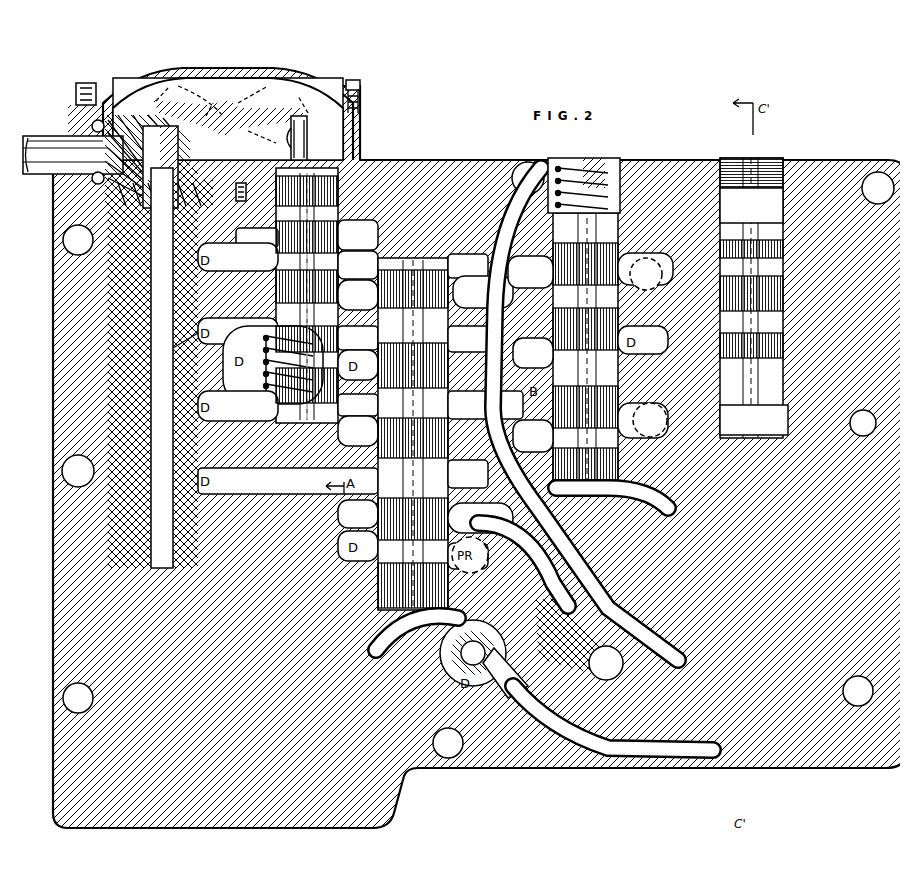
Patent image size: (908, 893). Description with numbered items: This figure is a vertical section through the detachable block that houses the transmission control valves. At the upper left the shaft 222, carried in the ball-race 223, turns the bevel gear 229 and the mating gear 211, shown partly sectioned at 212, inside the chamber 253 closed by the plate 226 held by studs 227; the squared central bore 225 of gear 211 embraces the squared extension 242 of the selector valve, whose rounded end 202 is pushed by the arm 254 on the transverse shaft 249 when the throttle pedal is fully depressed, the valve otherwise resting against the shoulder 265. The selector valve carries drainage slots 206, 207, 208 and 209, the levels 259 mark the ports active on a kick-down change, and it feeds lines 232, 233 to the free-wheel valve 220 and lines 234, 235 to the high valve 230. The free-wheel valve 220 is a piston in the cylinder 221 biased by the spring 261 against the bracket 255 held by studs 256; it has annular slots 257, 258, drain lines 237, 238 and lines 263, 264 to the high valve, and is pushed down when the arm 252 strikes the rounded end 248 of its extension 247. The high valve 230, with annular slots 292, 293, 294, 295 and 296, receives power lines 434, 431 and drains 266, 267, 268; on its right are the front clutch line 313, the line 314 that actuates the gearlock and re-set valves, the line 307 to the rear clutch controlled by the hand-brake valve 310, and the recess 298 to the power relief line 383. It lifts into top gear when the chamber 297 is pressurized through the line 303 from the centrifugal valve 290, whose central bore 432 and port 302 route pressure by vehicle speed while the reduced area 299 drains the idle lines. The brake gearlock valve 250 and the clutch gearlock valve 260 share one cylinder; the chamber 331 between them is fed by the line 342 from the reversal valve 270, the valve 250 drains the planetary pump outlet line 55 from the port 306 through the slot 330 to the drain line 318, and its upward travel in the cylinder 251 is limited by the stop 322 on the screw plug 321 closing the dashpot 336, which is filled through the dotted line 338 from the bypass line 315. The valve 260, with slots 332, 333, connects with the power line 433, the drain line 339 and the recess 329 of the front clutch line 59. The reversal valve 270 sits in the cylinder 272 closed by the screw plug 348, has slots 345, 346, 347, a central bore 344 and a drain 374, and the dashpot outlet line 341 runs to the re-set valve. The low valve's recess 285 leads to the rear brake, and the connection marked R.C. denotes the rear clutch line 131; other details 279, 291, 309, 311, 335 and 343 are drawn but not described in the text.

The cam chamber 202 is at (200, 105).
The drain port 206 is at (238, 257).
The drain port 207 is at (238, 331).
The drain port 208 is at (238, 406).
The drain port 209 is at (288, 481).
The vertical passage 211 is at (152, 205).
The bearing block 212 is at (231, 188).
The valve spool 220 is at (302, 299).
The spool land 221 is at (309, 419).
The input shaft 222 is at (28, 166).
The shaft housing 223 is at (65, 115).
The bevel gear 225 is at (205, 160).
The cover 226 is at (290, 78).
The cover bolt 227 is at (354, 78).
The bevel gear 229 is at (125, 125).
The valve spool 230 is at (413, 434).
The passage 232 is at (257, 238).
The spool land 233 is at (268, 295).
The spool land 234 is at (302, 397).
The passage 235 is at (302, 479).
The spool land 237 is at (307, 244).
The spring chamber 238 is at (273, 365).
The gear hub 242 is at (150, 135).
The follower groove 247 is at (300, 135).
The cam follower 248 is at (300, 118).
The cam 249 is at (222, 112).
The valve spool 250 is at (581, 325).
The spring 251 is at (572, 150).
The cam arm 252 is at (290, 108).
The bore 253 is at (325, 163).
The cam arm 254 is at (190, 105).
The retainer 255 is at (244, 162).
The spool head 256 is at (307, 191).
The passage 257 is at (347, 235).
The spool land 258 is at (269, 307).
The passage 259 is at (100, 330).
The spool land 260 is at (585, 332).
The spool land 261 is at (245, 419).
The passage 263 is at (358, 265).
The passage 264 is at (358, 338).
The bearing 265 is at (100, 195).
The passage 266 is at (358, 405).
The drain passage 267 is at (362, 428).
The spool land 268 is at (413, 519).
The valve spool 270 is at (749, 280).
The spring seat 272 is at (754, 420).
The bore 279 is at (760, 185).
The passage 285 is at (417, 629).
The pressure passage 290 is at (484, 659).
The passage 291 is at (475, 588).
The spool land 292 is at (458, 266).
The spool land 293 is at (459, 339).
The spool land 294 is at (475, 405).
The spool land 295 is at (459, 474).
The spool land 296 is at (459, 556).
The spool land 297 is at (413, 585).
The passage 298 is at (480, 519).
The passage 299 is at (417, 630).
The passage 302 is at (613, 711).
The passage 303 is at (485, 605).
The passage 306 is at (615, 275).
The passage 307 is at (548, 540).
The passage 309 is at (541, 586).
The passage 310 is at (600, 612).
The passage 311 is at (637, 620).
The section line B 313 is at (510, 384).
The passage 314 is at (640, 468).
The passage 315 is at (520, 150).
The passage 318 is at (530, 258).
The spring seat 321 is at (600, 150).
The passage 322 is at (537, 207).
The passage 329 is at (643, 415).
The passage 330 is at (556, 263).
The passage 331 is at (640, 280).
The spool land 332 is at (581, 398).
The pressure passage 333 is at (539, 436).
The passage 335 is at (612, 498).
The spring retainer 336 is at (548, 150).
The passage 338 is at (533, 353).
The passage 339 is at (655, 361).
The plug 341 is at (705, 150).
The passage 342 is at (679, 376).
The spool land 343 is at (733, 215).
The spool land 344 is at (752, 232).
The spool land 345 is at (751, 243).
The spool stem 346 is at (734, 296).
The spool land 347 is at (749, 355).
The plug 348 is at (745, 160).
The passage 374 is at (677, 313).
The passage 383 is at (470, 560).
The pressure port 431 is at (358, 514).
The passage 432 is at (480, 648).
The passage 433 is at (527, 455).
The pressure port 434 is at (360, 290).
The passage 55 is at (648, 282).
The passage 59 is at (630, 428).
The passage 131 is at (614, 666).